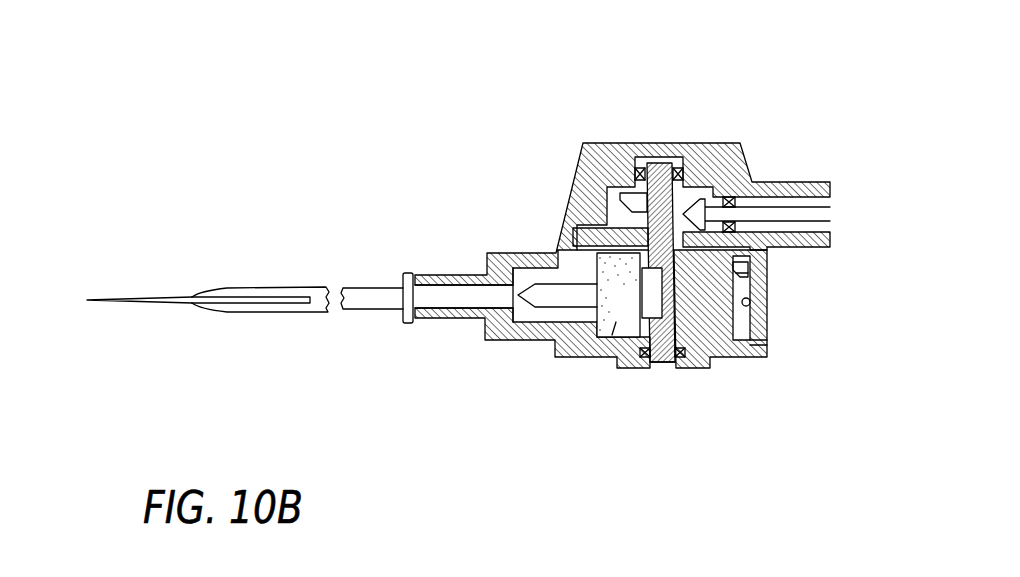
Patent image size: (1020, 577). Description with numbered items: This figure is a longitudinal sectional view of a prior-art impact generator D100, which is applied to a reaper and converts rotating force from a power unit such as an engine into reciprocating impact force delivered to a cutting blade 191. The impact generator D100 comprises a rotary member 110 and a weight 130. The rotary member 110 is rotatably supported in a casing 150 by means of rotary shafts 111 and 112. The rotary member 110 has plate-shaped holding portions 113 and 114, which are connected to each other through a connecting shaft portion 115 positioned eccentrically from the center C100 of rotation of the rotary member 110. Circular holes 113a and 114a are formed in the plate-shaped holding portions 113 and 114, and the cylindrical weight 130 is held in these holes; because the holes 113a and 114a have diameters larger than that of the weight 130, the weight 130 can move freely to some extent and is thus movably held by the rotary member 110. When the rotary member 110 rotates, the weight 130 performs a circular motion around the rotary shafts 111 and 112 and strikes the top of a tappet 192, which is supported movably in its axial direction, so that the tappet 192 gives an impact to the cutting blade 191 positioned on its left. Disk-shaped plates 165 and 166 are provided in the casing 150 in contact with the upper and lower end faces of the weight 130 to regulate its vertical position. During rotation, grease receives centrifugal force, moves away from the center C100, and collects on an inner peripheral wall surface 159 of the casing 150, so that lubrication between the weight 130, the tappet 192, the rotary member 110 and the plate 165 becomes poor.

The impact generator D100 is at (455, 153).
The center of rotation C100 is at (658, 138).
The cutting blade 191 is at (265, 312).
The tappet 192 is at (528, 336).
The rotary shaft 111 is at (577, 188).
The rotary shaft 112 is at (667, 370).
The rotary member 110 is at (768, 297).
The disk-shaped plate 165 is at (767, 257).
The casing 150 is at (727, 358).
The plate-shaped holding portion 113 is at (768, 270).
The circular hole 113a is at (600, 232).
The plate-shaped holding portion 114 is at (768, 337).
The circular hole 114a is at (628, 370).
The weight 130 is at (602, 357).
The connecting shaft portion 115 is at (768, 317).
The inner peripheral wall surface 159 is at (768, 327).
The disk-shaped plate 166 is at (772, 343).